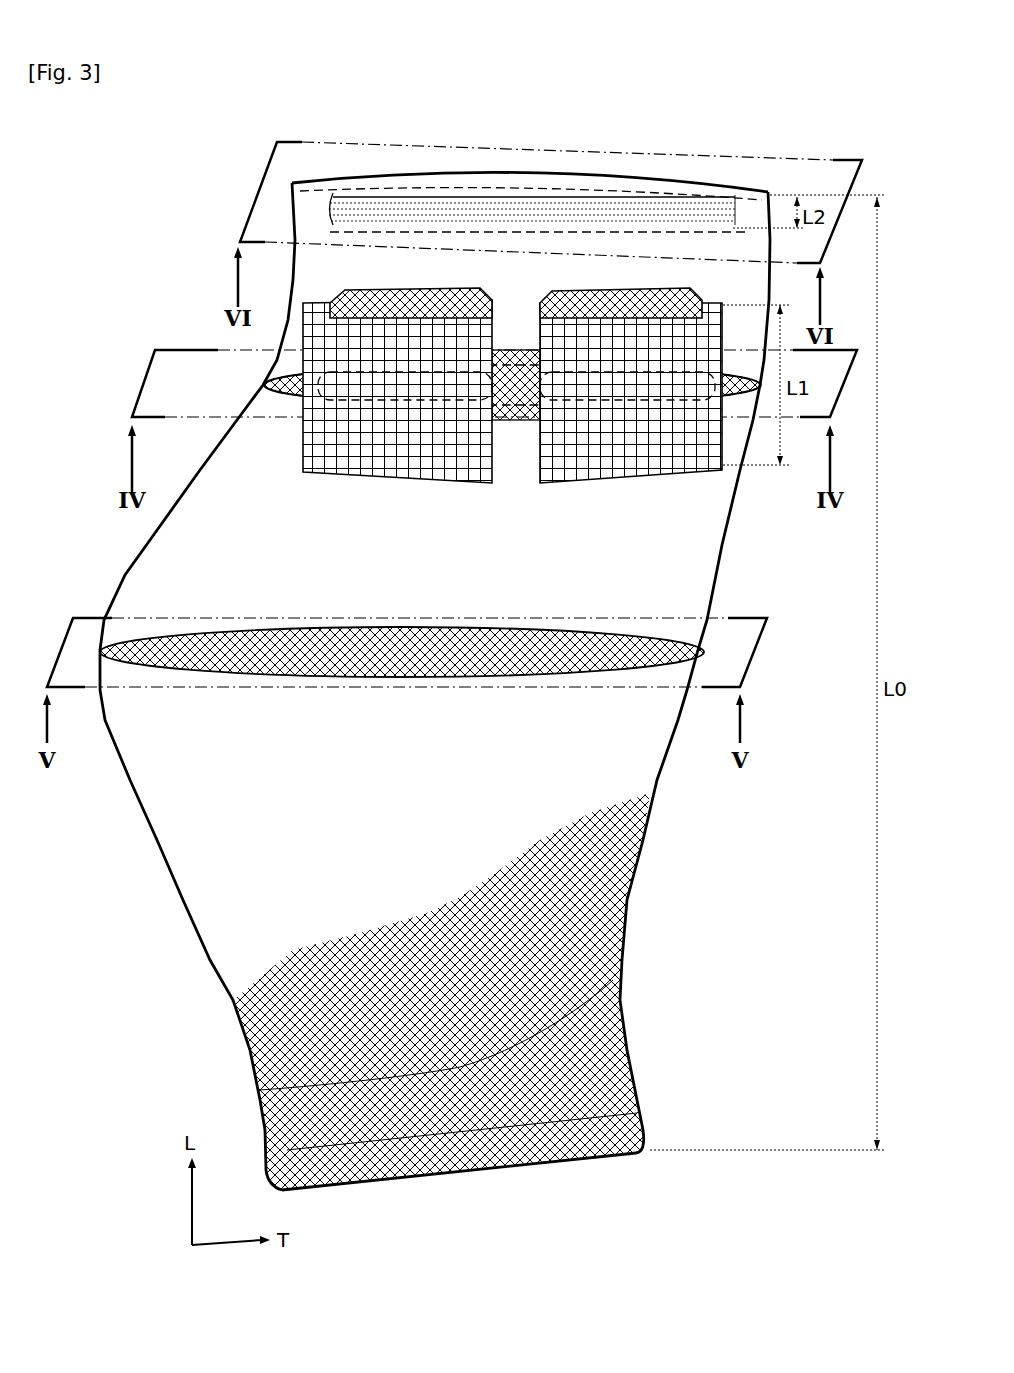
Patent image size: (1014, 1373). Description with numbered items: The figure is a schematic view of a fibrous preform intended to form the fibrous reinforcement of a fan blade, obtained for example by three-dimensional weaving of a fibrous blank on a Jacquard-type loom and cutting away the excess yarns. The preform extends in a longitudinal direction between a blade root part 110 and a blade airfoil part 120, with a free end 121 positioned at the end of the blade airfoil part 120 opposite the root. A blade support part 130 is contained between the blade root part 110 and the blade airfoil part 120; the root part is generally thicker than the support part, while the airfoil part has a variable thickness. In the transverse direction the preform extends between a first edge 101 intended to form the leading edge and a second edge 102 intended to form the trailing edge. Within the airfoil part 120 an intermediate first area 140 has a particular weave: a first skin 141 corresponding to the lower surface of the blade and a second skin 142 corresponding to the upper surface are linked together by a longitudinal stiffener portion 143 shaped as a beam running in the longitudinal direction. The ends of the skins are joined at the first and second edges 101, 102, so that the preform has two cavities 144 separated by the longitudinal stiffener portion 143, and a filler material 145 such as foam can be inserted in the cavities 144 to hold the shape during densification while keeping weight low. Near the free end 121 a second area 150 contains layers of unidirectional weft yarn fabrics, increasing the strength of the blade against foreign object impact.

The first edge 101 is at (150, 853).
The second edge 102 is at (658, 843).
The blade root part 110 is at (556, 1145).
The blade airfoil part 120 is at (605, 905).
The free end 121 is at (543, 172).
The blade support part 130 is at (612, 1010).
The first area 140 is at (464, 392).
The first skin 141 is at (296, 372).
The second skin 142 is at (278, 402).
The longitudinal stiffener portion 143 is at (522, 428).
The cavities 144 is at (372, 462).
The filler material 145 is at (550, 293).
The second area 150 is at (306, 210).